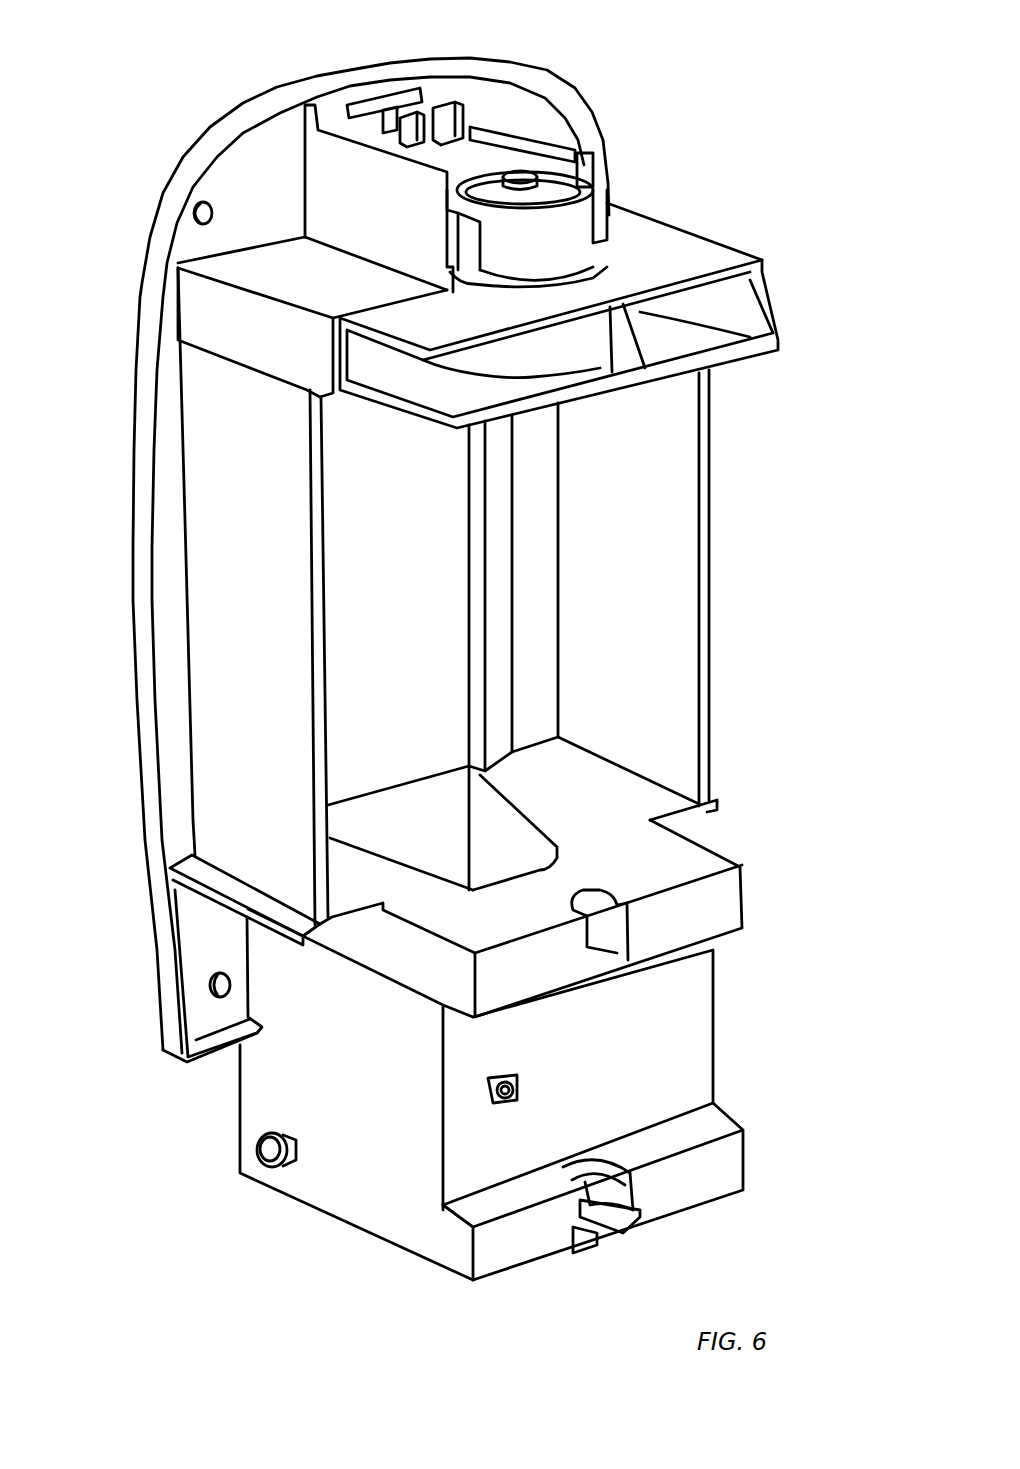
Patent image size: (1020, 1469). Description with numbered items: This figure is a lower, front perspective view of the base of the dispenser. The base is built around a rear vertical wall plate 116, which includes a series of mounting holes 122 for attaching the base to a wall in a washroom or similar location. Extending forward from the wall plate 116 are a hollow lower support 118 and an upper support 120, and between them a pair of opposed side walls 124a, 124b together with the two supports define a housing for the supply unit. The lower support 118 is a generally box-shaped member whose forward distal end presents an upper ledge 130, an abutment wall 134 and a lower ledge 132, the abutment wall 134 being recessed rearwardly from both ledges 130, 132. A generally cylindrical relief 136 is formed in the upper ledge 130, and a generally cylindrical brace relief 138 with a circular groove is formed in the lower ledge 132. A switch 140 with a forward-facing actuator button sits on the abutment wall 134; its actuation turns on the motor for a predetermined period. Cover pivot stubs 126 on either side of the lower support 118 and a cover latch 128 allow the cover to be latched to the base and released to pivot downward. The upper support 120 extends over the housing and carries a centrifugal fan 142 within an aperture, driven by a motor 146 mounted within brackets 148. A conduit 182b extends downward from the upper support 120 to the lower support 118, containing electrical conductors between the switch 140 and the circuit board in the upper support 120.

The rear vertical wall plate 116 is at (135, 524).
The hollow lower support 118 is at (313, 1069).
The upper support 120 is at (724, 241).
The mounting holes 122 is at (212, 987).
The side wall 124a is at (313, 740).
The side wall 124b is at (710, 702).
The cover pivot stubs 126 is at (270, 1157).
The cover latch 128 is at (435, 90).
The upper ledge 130 is at (742, 888).
The lower ledge 132 is at (742, 1160).
The abutment wall 134 is at (714, 1032).
The cylindrical relief 136 is at (617, 955).
The brace relief 138 is at (600, 1207).
The switch 140 is at (490, 1097).
The centrifugal fan 142 is at (583, 357).
The motor 146 is at (570, 217).
The brackets 148 is at (340, 170).
The conduit 182b is at (468, 553).